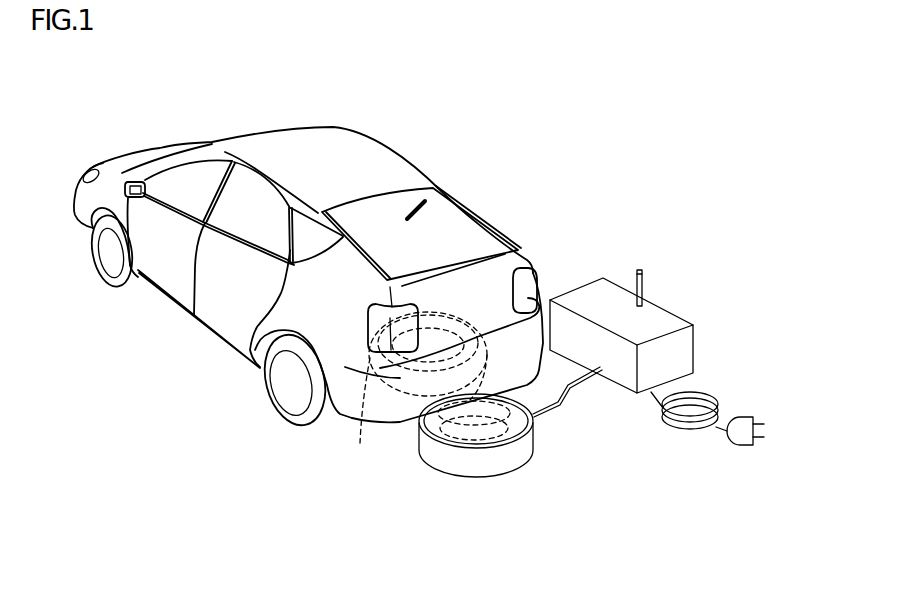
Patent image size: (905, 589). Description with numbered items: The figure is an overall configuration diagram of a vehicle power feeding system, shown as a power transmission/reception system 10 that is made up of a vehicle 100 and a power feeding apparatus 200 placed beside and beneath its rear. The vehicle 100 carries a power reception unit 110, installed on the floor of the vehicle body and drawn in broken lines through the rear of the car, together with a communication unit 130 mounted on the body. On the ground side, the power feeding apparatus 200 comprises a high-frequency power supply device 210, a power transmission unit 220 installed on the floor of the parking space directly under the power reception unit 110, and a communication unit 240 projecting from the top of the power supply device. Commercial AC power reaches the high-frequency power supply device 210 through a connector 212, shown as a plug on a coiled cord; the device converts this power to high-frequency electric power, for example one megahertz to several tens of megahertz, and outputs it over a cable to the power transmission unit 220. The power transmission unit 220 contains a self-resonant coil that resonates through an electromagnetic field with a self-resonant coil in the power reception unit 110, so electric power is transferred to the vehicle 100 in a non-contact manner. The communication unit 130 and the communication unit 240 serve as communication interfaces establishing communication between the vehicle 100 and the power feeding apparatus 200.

The power transmission/reception system 10 is at (104, 73).
The vehicle 100 is at (280, 140).
The power reception unit 110 is at (417, 390).
The communication unit 130 is at (423, 213).
The power feeding apparatus 200 is at (763, 378).
The high-frequency power supply device 210 is at (705, 325).
The connector 212 is at (741, 446).
The power transmission unit 220 is at (531, 446).
The communication unit 240 is at (644, 287).